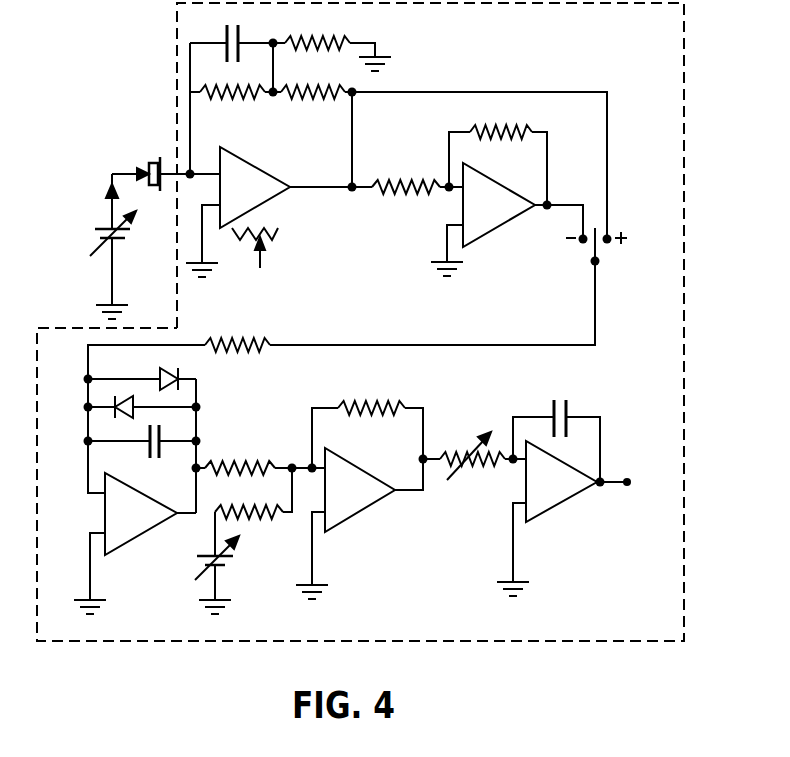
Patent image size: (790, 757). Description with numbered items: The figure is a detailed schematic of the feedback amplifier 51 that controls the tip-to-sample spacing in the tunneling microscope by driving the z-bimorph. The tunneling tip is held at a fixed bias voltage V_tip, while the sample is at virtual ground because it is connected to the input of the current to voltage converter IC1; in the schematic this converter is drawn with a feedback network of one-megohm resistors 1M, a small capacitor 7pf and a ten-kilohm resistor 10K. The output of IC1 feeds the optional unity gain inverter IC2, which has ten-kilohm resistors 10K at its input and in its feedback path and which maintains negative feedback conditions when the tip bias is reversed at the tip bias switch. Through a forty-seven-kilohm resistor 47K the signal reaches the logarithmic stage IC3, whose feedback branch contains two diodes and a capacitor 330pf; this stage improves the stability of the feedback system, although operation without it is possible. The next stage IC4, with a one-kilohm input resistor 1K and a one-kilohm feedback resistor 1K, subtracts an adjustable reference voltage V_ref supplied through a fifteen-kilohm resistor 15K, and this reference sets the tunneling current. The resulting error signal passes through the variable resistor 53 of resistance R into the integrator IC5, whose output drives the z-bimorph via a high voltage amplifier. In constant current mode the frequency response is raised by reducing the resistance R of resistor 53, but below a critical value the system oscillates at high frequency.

The feedback amplifier 51 is at (684, 72).
The resistor 53 is at (466, 478).
The current to voltage converter IC1 is at (255, 187).
The unity gain inverter IC2 is at (499, 205).
The logarithmic stage IC3 is at (141, 514).
The subtraction amplifier IC4 is at (360, 490).
The integrator IC5 is at (561, 481).
The 7 pF feedback capacitor 7pf is at (243, 41).
The 10 kilohm resistors 10K is at (408, 115).
The 1 megohm resistors 1M is at (272, 92).
The 47 kilohm resistor 47K is at (237, 335).
The 1 kilohm resistors 1K is at (305, 438).
The 15 kilohm resistor 15K is at (249, 501).
The 330 pF capacitor 330pf is at (151, 457).